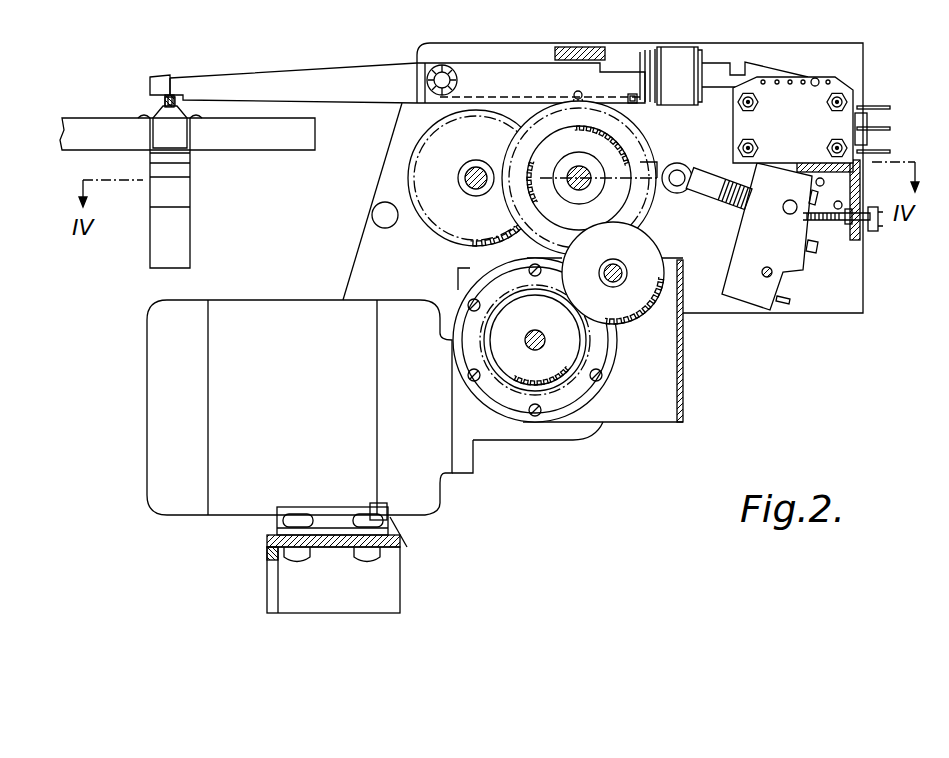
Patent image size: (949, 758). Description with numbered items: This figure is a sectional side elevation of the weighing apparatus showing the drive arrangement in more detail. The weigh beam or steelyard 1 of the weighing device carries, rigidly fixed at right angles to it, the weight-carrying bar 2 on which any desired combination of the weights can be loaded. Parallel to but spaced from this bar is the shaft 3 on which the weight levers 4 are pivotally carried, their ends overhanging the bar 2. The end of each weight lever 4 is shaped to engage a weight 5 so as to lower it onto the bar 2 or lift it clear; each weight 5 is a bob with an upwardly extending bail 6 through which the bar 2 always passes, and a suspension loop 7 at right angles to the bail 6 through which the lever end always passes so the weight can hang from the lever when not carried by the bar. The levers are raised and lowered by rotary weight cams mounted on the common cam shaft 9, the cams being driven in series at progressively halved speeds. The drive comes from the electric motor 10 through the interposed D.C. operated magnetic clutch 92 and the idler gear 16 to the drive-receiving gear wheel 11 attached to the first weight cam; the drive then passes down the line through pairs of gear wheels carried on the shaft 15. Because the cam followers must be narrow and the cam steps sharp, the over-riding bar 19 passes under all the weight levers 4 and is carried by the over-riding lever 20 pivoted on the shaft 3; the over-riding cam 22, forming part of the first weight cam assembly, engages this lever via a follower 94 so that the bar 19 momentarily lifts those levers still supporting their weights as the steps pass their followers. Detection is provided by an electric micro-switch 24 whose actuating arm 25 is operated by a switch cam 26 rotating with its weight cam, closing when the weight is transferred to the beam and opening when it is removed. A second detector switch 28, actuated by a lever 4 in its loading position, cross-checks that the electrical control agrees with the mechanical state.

The weigh beam or steelyard 1 is at (108, 143).
The weight-carrying bar 2 is at (163, 108).
The shaft 3 is at (418, 63).
The weight lever 4 is at (347, 84).
The weight 5 is at (178, 187).
The bail 6 is at (153, 138).
The suspension loop 7 is at (167, 77).
The cam shaft 9 is at (570, 185).
The electric motor 10 is at (407, 477).
The drive-receiving gear wheel 11 is at (610, 203).
The shaft 15 is at (472, 191).
The idler gear 16 is at (645, 316).
The over-riding bar 19 is at (632, 93).
The over-riding lever 20 is at (477, 75).
The over-riding cam 22 is at (560, 122).
The micro-switch 24 is at (745, 285).
The actuating arm 25 is at (707, 187).
The switch cam 26 is at (640, 197).
The detector switch 28 is at (815, 136).
The magnetic clutch 92 is at (652, 410).
The follower 94 is at (575, 91).